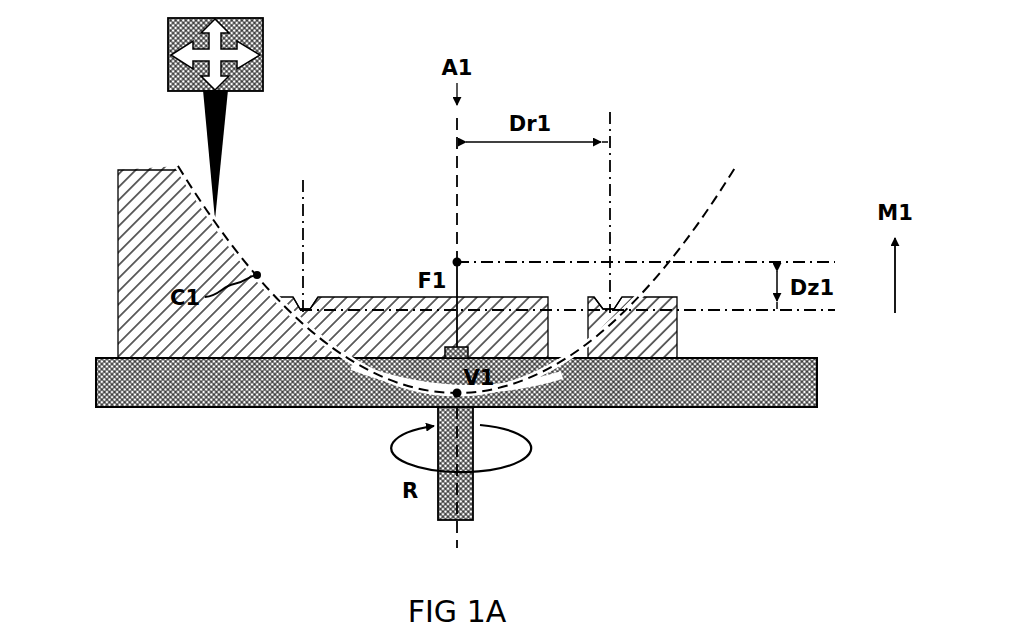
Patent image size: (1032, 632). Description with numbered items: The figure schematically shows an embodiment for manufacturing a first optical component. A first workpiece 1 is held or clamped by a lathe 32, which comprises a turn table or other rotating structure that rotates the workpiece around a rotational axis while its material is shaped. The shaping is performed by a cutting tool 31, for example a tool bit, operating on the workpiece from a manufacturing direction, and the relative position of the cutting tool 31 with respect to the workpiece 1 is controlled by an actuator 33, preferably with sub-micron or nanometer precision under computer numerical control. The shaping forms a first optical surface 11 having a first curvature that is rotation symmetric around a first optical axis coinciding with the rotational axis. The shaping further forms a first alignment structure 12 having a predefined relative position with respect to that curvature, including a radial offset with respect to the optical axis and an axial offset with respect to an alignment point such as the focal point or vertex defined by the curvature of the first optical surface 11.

The first workpiece 1 is at (137, 238).
The first optical surface 11 is at (243, 240).
The first alignment structure 12 is at (305, 296).
The cutting tool 31 is at (230, 187).
The lathe 32 is at (82, 385).
The actuator 33 is at (160, 57).